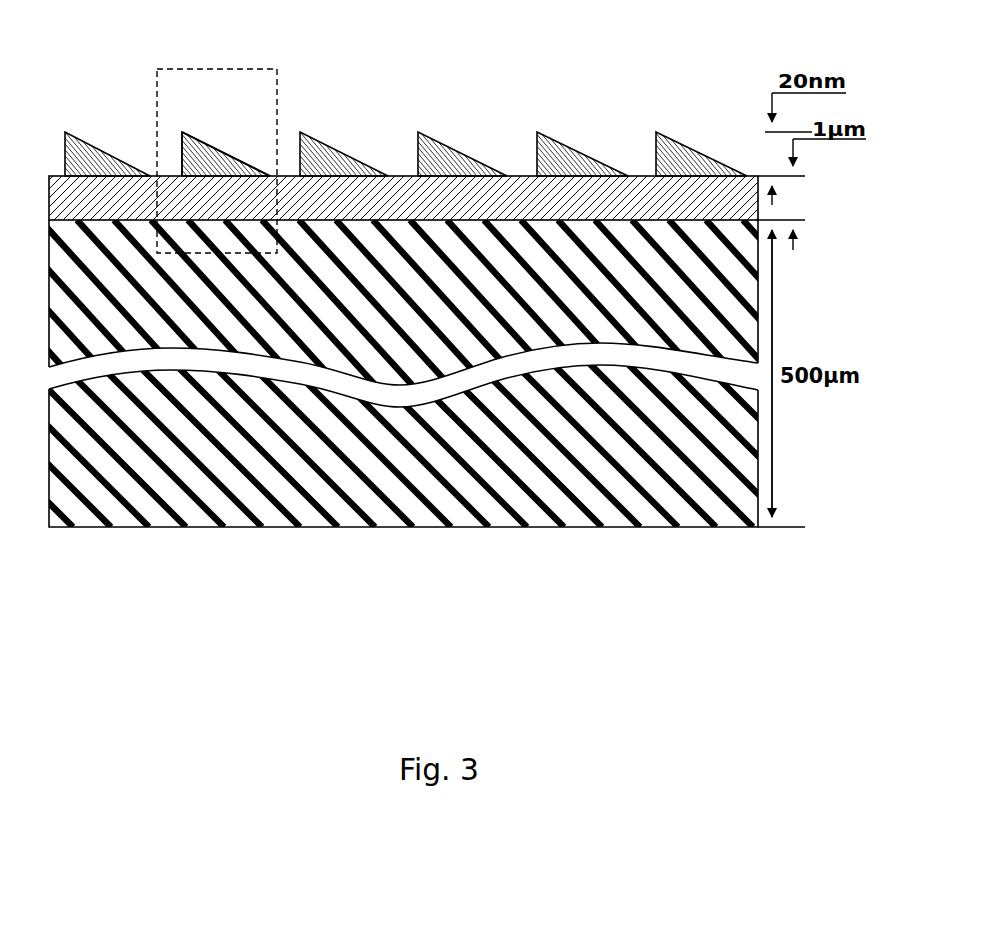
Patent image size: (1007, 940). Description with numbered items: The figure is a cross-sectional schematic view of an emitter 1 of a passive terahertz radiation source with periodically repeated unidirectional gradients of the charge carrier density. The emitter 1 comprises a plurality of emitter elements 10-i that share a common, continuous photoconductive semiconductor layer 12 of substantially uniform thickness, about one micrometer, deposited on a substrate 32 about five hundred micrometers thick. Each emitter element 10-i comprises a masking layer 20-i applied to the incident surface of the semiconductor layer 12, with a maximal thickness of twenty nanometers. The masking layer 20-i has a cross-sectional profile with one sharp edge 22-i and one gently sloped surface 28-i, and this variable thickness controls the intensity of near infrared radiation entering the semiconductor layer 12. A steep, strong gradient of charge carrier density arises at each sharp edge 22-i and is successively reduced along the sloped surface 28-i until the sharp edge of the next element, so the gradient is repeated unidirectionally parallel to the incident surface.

The emitter 1 is at (685, 116).
The emitter element 10-i is at (157, 81).
The semiconductor layer 12 is at (408, 198).
The masking layer 20-i is at (188, 139).
The sharp edge 22-i is at (180, 165).
The sloped surface 28-i is at (230, 154).
The substrate 32 is at (527, 242).